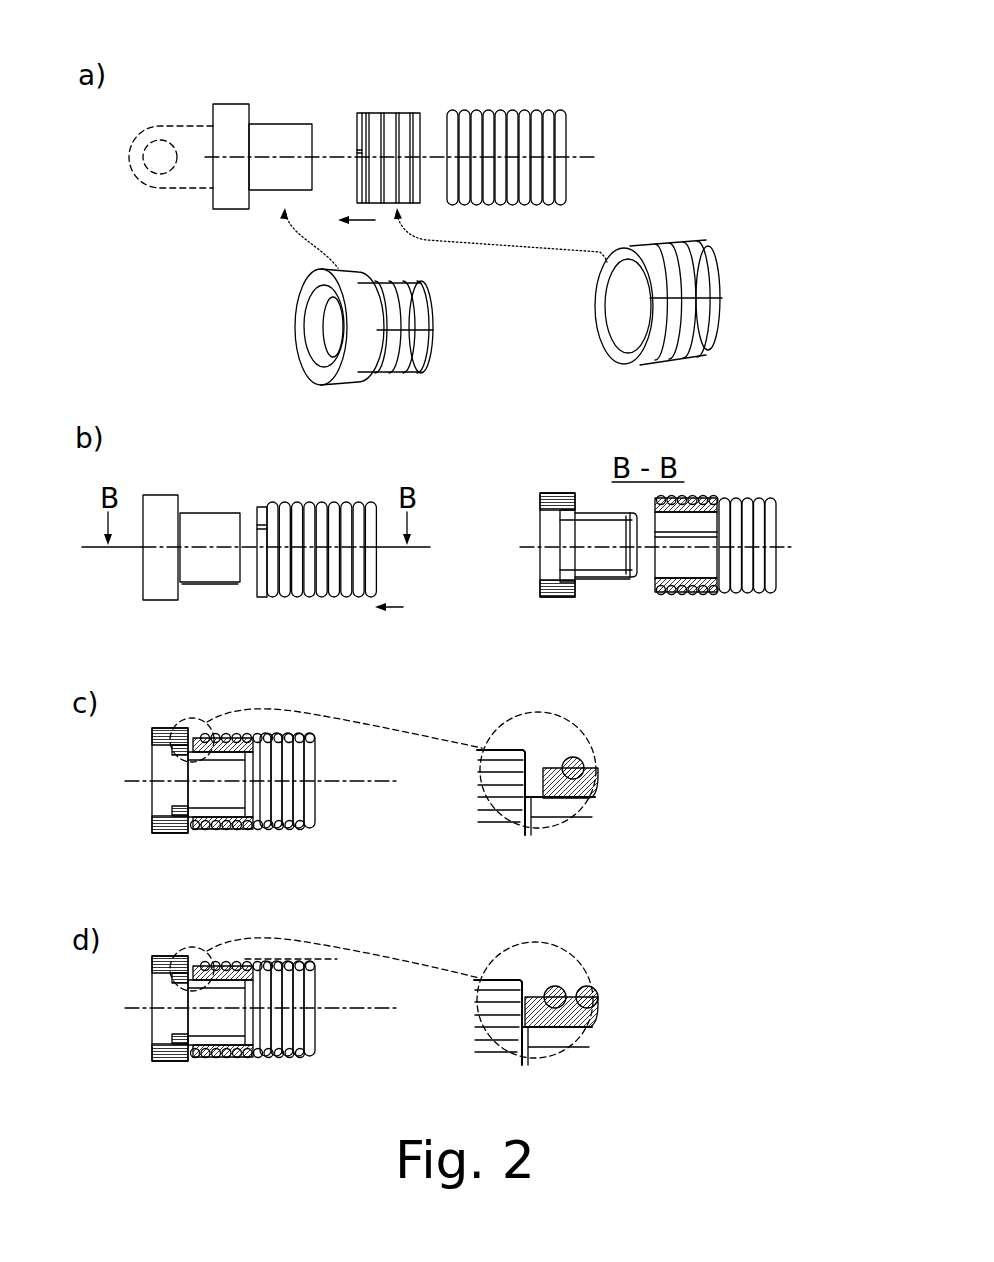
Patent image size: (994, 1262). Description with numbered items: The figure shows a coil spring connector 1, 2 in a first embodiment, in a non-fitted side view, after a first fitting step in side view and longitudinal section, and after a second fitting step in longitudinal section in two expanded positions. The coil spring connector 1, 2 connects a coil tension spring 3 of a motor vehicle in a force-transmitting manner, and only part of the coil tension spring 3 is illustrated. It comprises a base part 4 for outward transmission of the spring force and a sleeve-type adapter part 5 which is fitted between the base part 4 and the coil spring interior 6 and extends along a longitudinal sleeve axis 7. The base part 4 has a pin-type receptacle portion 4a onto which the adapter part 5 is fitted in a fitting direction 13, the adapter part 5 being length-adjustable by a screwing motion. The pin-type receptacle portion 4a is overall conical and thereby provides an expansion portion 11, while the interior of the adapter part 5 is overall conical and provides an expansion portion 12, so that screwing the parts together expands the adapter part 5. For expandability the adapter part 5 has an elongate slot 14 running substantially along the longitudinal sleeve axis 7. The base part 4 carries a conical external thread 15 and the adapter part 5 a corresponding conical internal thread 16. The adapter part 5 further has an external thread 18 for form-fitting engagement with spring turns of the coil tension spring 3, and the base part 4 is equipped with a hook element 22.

The coil spring connector 1 is at (774, 433).
The coil spring connector 2 is at (272, 69).
The coil tension spring 3 is at (520, 118).
The base part 4 is at (242, 239).
The pin-type receptacle portion 4a is at (280, 136).
The sleeve-type adapter part 5 is at (411, 95).
The coil spring interior 6 is at (438, 128).
The longitudinal sleeve axis 7 is at (597, 157).
The expansion portion 11 is at (205, 584).
The expansion portion 12 is at (681, 585).
The fitting direction 13 is at (375, 220).
The slot 14 is at (725, 292).
The external thread 15 is at (626, 578).
The internal thread 16 is at (703, 500).
The external thread 18 is at (385, 115).
The hook element 22 is at (192, 143).